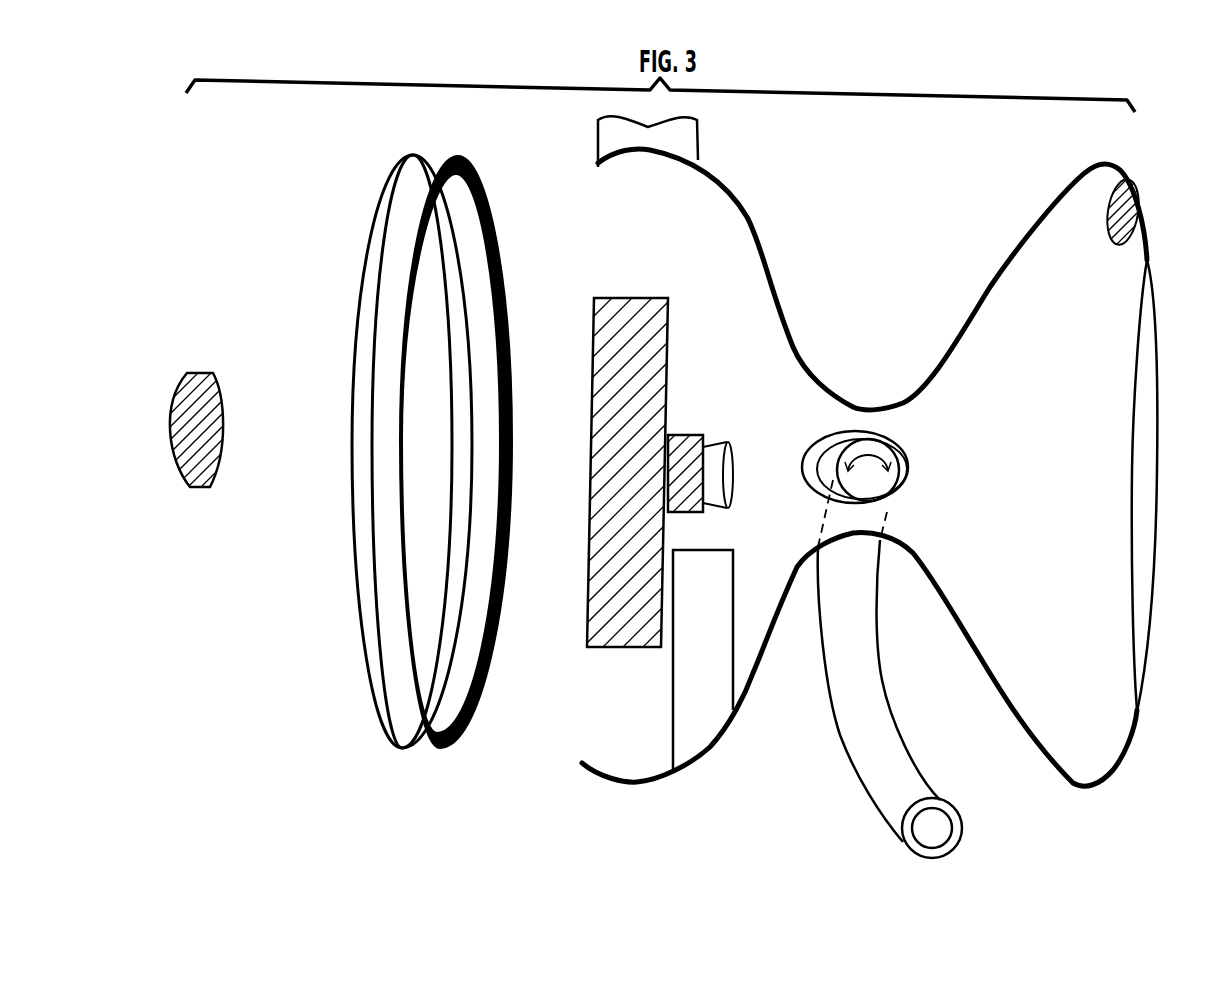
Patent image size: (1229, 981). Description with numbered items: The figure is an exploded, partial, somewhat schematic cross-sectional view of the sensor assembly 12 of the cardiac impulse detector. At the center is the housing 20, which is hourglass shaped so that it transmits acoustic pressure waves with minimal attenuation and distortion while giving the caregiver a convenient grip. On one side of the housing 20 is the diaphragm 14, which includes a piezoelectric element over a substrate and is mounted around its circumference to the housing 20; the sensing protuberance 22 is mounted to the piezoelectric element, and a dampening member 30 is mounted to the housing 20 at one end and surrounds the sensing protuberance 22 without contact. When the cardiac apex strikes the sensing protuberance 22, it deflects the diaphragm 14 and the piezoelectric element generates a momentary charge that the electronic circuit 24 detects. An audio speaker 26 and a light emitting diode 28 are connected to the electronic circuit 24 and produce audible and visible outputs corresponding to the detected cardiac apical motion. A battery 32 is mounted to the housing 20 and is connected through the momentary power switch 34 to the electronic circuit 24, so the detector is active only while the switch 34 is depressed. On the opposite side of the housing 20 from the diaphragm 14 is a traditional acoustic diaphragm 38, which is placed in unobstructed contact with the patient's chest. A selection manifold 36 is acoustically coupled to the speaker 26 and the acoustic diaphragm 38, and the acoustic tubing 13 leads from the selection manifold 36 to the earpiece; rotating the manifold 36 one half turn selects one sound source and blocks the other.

The sensor assembly 12 is at (880, 203).
The acoustic tubing 13 is at (830, 714).
The diaphragm 14 is at (453, 156).
The housing 20 is at (592, 772).
The sensing protuberance 22 is at (194, 372).
The electronic circuit 24 is at (624, 297).
The audio speaker 26 is at (713, 440).
The light emitting diode 28 is at (1133, 188).
The dampening member 30 is at (410, 156).
The battery 32 is at (672, 716).
The momentary power switch 34 is at (688, 133).
The selection manifold 36 is at (905, 447).
The acoustic diaphragm 38 is at (1158, 338).